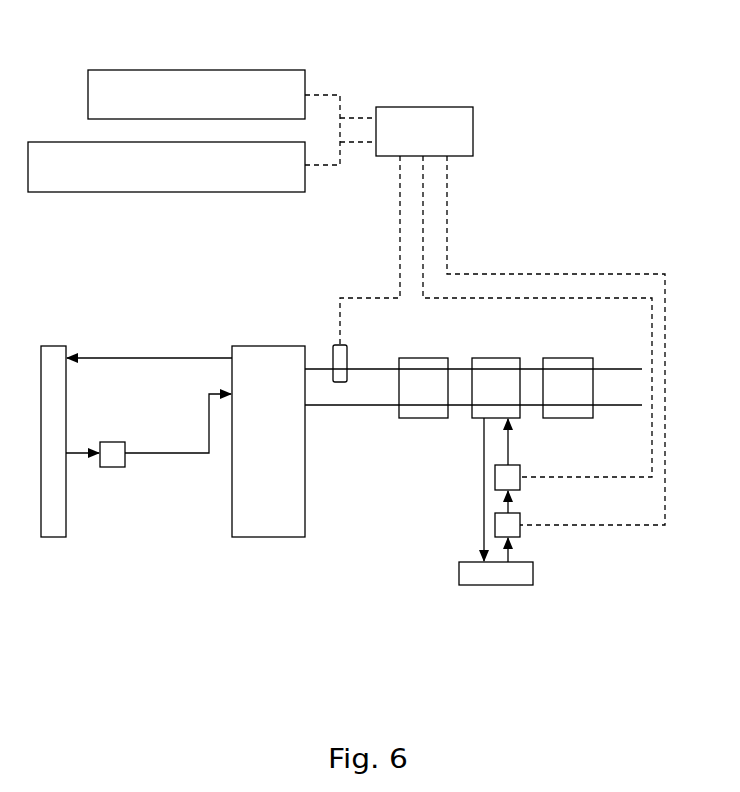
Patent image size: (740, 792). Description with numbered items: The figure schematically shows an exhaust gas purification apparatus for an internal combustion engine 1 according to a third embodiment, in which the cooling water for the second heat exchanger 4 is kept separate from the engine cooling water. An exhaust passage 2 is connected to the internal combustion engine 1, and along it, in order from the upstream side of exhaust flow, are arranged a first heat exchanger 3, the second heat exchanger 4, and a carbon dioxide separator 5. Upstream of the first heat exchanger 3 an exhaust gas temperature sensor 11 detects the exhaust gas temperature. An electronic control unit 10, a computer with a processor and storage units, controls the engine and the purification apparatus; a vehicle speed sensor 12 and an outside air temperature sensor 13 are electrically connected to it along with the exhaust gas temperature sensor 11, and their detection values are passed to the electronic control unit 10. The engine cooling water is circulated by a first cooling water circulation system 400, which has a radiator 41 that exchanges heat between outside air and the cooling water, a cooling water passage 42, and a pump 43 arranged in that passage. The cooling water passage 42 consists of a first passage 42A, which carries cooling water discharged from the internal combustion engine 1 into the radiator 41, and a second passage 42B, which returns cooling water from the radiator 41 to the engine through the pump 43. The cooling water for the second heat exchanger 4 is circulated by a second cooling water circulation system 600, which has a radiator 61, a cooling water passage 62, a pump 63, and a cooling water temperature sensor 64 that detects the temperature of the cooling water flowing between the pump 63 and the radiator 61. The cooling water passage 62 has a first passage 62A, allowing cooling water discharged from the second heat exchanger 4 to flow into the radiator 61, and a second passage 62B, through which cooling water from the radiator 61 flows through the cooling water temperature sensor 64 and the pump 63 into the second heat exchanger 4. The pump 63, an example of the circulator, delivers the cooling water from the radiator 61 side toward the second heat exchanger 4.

The internal combustion engine 1 is at (305, 467).
The exhaust passage 2 is at (327, 407).
The first heat exchanger 3 is at (425, 358).
The second heat exchanger 4 is at (497, 358).
The carbon dioxide separator 5 is at (567, 358).
The electronic control unit 10 is at (423, 107).
The exhaust gas temperature sensor 11 is at (347, 357).
The vehicle speed sensor 12 is at (260, 70).
The outside air temperature sensor 13 is at (255, 192).
The radiator 41 is at (62, 346).
The cooling water passage 42 is at (167, 375).
The first passage 42A is at (133, 358).
The second passage 42B is at (209, 417).
The pump 43 is at (118, 442).
The first cooling water circulation system 400 is at (152, 447).
The radiator 61 is at (533, 572).
The cooling water passage 62 is at (496, 490).
The first passage 62A is at (484, 520).
The second passage 62B is at (510, 442).
The pump 63 is at (520, 481).
The cooling water temperature sensor 64 is at (520, 530).
The second cooling water circulation system 600 is at (496, 522).